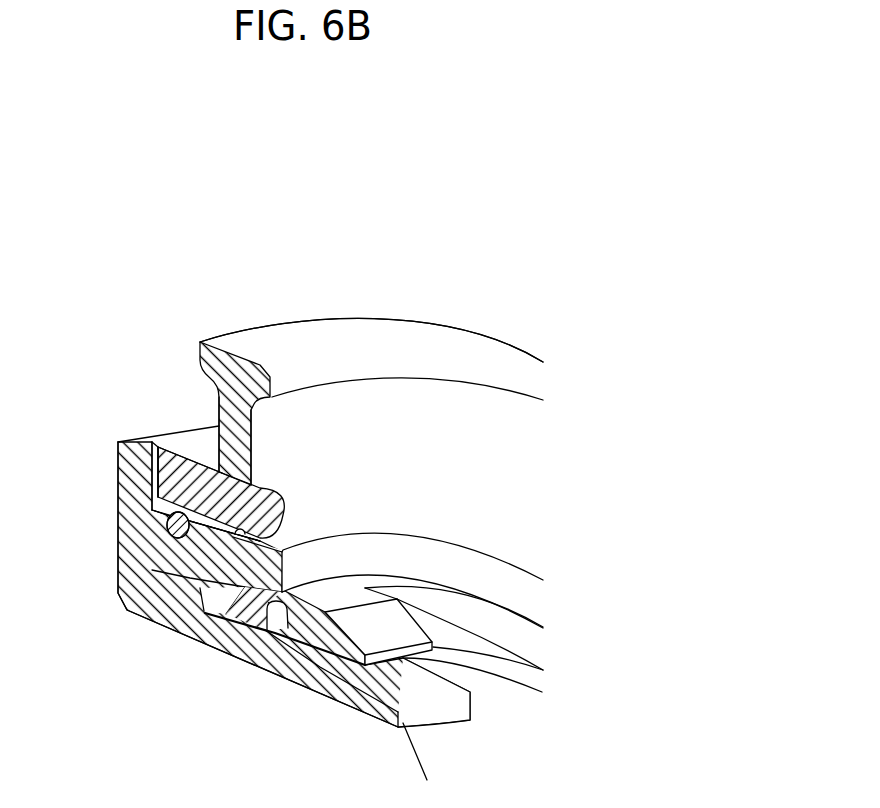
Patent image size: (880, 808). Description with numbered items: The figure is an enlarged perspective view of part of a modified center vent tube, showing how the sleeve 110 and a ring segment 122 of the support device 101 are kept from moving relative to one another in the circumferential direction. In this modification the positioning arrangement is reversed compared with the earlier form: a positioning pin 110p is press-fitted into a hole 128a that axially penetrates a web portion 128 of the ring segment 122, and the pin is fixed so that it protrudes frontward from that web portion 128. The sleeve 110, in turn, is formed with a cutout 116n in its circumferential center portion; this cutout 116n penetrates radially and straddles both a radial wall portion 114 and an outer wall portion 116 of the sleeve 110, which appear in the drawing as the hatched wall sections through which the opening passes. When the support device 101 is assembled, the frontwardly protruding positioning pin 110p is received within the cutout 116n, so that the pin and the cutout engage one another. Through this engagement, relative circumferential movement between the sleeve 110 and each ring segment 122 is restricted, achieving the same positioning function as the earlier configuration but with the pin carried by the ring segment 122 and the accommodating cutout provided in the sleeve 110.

The support device 101 is at (196, 294).
The sleeve 110 is at (118, 440).
The positioning pin 110p is at (190, 488).
The radial wall portion 114 is at (118, 515).
The outer wall portion 116 is at (207, 427).
The cutout 116n is at (177, 443).
The ring segment 122 is at (292, 318).
The web portion 128 is at (263, 438).
The hole 128a is at (235, 530).